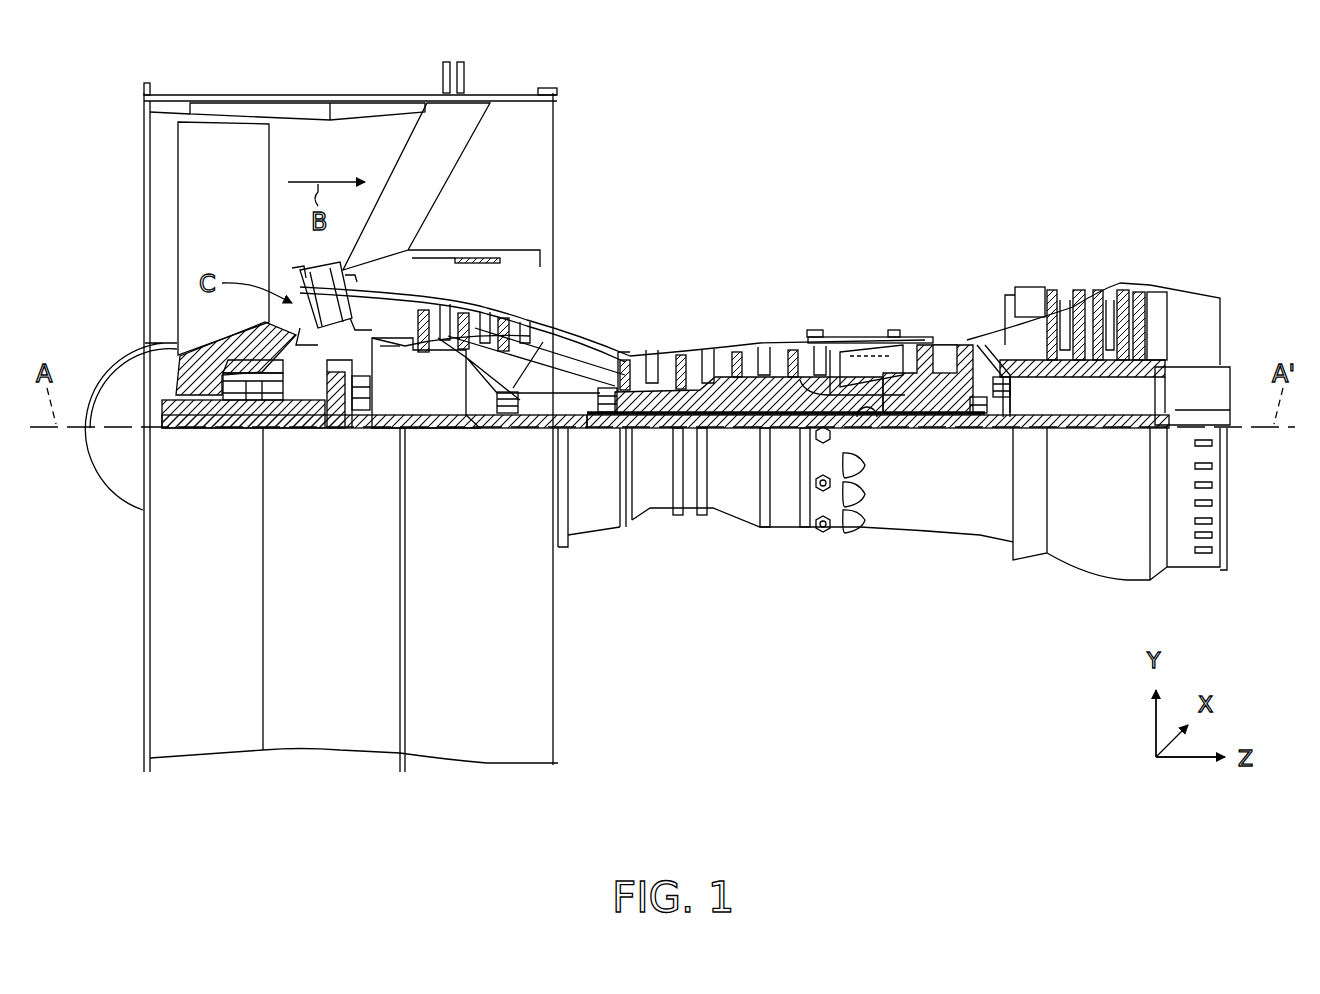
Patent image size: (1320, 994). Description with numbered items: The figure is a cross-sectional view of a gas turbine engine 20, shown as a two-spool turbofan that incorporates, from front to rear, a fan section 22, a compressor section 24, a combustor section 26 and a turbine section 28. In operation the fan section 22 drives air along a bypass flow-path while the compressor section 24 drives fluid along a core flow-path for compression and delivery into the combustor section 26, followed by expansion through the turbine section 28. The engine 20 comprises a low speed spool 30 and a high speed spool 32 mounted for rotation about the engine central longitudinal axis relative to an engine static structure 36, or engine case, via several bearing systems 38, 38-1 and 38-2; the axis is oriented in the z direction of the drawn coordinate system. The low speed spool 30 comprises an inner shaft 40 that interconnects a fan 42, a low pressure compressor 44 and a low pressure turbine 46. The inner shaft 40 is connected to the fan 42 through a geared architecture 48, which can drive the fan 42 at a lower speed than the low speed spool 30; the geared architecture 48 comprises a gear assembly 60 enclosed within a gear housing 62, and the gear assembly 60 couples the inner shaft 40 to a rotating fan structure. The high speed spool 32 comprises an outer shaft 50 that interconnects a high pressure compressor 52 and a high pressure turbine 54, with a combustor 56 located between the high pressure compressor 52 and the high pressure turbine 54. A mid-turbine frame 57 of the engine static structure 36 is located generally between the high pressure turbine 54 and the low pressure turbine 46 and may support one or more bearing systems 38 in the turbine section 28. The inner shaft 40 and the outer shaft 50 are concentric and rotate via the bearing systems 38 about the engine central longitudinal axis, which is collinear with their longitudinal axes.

The gas turbine engine 20 is at (698, 100).
The fan section 22 is at (398, 72).
The compressor section 24 is at (410, 212).
The combustor section 26 is at (925, 212).
The turbine section 28 is at (1160, 212).
The low speed spool 30 is at (744, 443).
The high speed spool 32 is at (780, 385).
The engine static structure 36 is at (783, 515).
The bearing system 38 is at (990, 428).
The bearing system 38-1 is at (232, 428).
The bearing system 38-2 is at (510, 428).
The inner shaft 40 is at (586, 432).
The fan 42 is at (223, 238).
The low pressure compressor 44 is at (490, 314).
The low pressure turbine 46 is at (1083, 305).
The geared architecture 48 is at (360, 445).
The outer shaft 50 is at (865, 403).
The high pressure compressor 52 is at (720, 370).
The high pressure turbine 54 is at (940, 343).
The combustor 56 is at (862, 362).
The mid-turbine frame 57 is at (992, 360).
The gear assembly 60 is at (356, 432).
The gear housing 62 is at (368, 366).